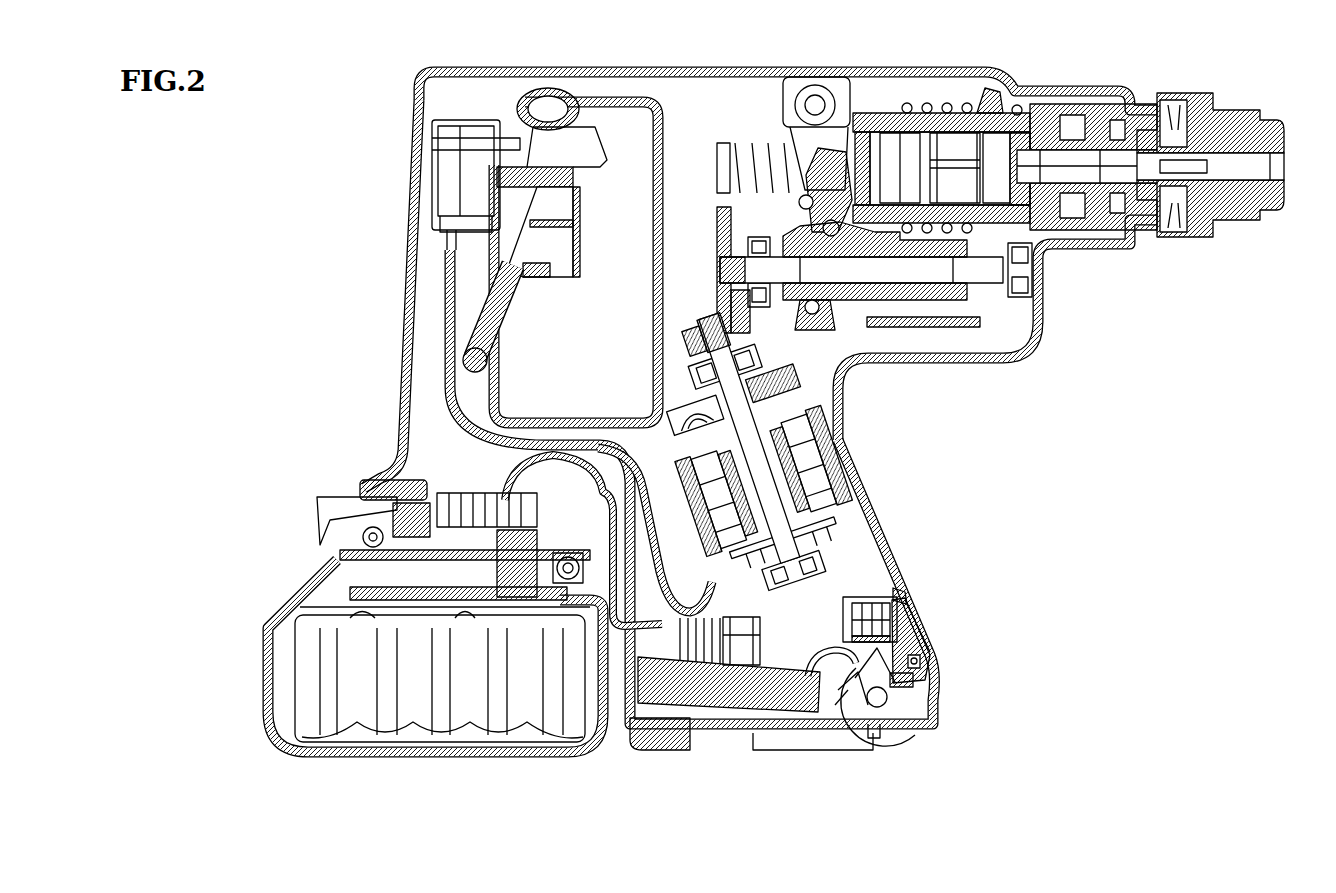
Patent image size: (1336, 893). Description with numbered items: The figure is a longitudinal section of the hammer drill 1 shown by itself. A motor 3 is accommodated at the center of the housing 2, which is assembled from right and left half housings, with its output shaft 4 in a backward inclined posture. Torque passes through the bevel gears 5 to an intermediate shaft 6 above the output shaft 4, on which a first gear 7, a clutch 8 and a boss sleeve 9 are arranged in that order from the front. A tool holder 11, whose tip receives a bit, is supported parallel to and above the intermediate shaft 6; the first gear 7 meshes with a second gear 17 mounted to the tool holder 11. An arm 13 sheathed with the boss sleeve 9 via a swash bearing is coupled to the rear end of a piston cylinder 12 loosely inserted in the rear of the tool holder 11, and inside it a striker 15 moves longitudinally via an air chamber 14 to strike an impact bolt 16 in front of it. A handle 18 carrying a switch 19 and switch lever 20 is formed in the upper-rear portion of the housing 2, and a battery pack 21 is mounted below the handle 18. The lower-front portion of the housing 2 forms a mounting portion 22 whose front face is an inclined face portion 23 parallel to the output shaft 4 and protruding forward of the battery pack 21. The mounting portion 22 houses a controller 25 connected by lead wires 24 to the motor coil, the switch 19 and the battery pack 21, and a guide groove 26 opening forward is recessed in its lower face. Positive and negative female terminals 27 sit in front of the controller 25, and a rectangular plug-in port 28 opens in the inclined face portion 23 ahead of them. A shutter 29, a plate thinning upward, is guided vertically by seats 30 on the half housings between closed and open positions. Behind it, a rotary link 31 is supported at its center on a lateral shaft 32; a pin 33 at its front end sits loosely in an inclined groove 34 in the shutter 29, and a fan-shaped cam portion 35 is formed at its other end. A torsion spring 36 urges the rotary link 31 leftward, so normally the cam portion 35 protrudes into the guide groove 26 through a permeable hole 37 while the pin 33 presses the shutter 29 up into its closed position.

The hammer drill 1 is at (735, 45).
The housing 2 is at (695, 66).
The motor 3 is at (830, 470).
The output shaft 4 is at (775, 425).
The bevel gears 5 is at (717, 250).
The intermediate shaft 6 is at (1020, 275).
The first gear 7 is at (975, 283).
The clutch 8 is at (890, 322).
The boss sleeve 9 is at (838, 312).
The tool holder 11 is at (1105, 108).
The piston cylinder 12 is at (960, 110).
The arm 13 is at (833, 95).
The air chamber 14 is at (900, 130).
The striker 15 is at (940, 130).
The impact bolt 16 is at (1045, 150).
The second gear 17 is at (985, 92).
The handle 18 is at (422, 278).
The switch 19 is at (455, 172).
The switch lever 20 is at (580, 192).
The battery pack 21 is at (428, 740).
The mounting portion 22 is at (720, 715).
The inclined face portion 23 is at (880, 515).
The lead wires 24 is at (580, 418).
The controller 25 is at (672, 730).
The guide groove 26 is at (787, 745).
The female terminals 27 is at (885, 580).
The plug-in port 28 is at (920, 620).
The shutter 29 is at (930, 642).
The seats 30 is at (905, 600).
The rotary link 31 is at (905, 720).
The lateral shaft 32 is at (880, 715).
The pin 33 is at (920, 685).
The inclined groove 34 is at (925, 660).
The cam portion 35 is at (865, 722).
The torsion spring 36 is at (845, 710).
The permeable hole 37 is at (878, 708).